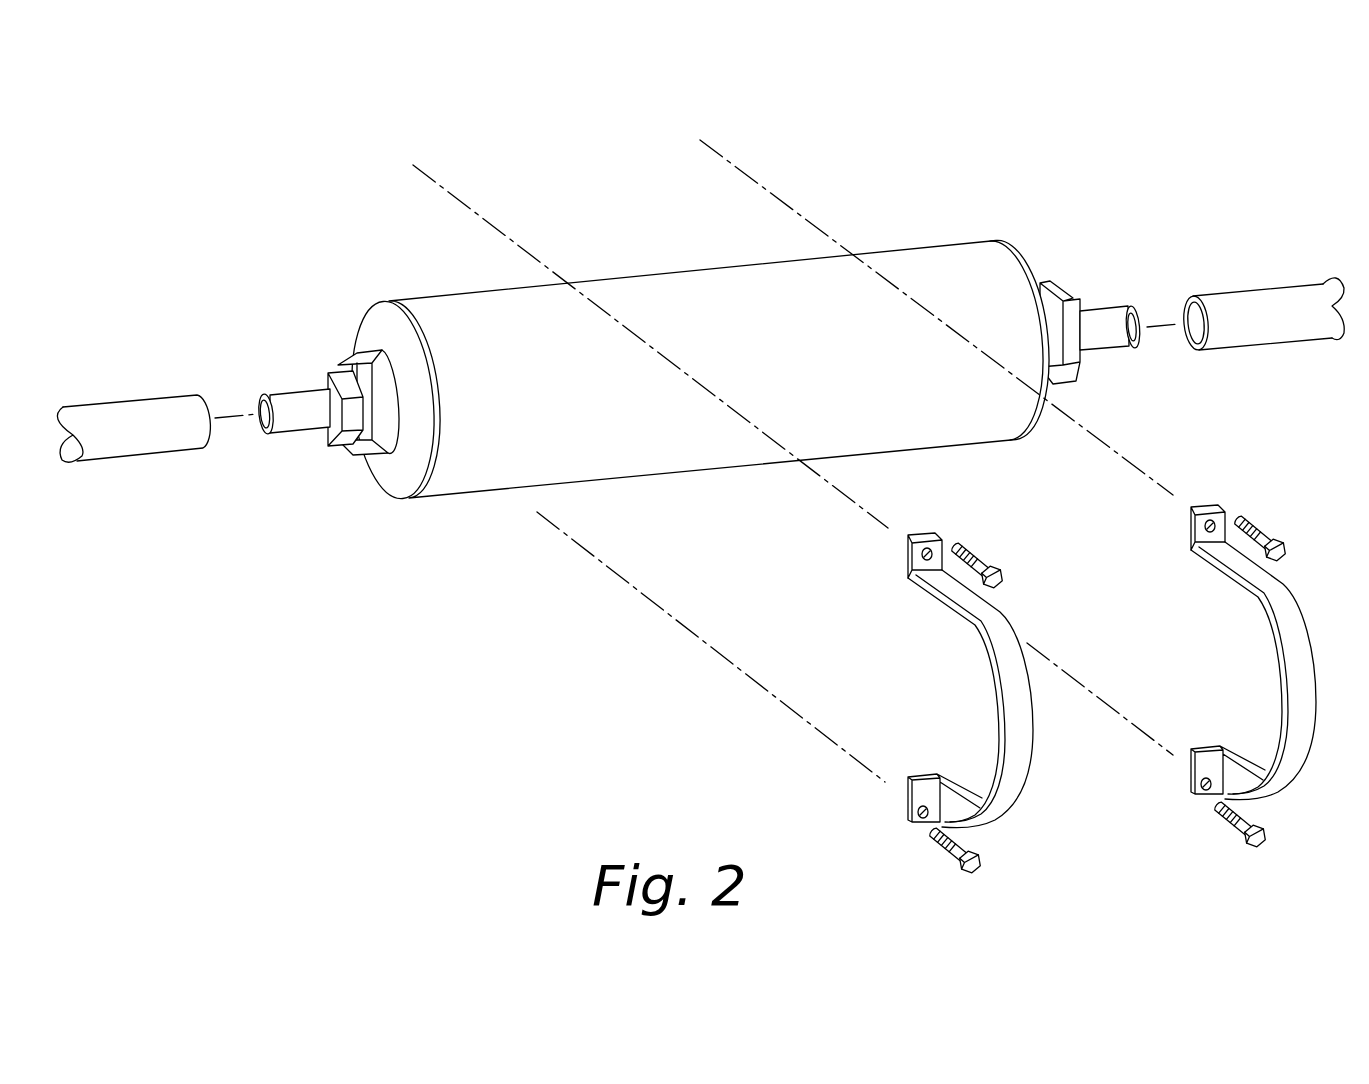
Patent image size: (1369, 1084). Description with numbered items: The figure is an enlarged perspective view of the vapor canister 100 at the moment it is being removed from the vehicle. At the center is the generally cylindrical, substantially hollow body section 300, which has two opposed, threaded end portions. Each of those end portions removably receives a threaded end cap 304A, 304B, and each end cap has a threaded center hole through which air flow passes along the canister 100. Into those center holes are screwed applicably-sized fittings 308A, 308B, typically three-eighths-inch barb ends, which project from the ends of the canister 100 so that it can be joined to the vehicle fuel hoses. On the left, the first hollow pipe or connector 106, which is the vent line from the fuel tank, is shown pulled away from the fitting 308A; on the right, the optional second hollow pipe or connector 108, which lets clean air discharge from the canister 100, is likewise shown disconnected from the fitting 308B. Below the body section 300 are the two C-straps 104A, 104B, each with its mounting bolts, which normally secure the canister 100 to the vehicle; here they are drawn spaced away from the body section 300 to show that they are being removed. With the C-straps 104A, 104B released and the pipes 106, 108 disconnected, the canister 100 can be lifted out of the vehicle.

The canister 100 is at (700, 483).
The body section 300 is at (837, 372).
The end cap 304A is at (385, 326).
The end cap 304B is at (1032, 258).
The fitting 308A is at (302, 415).
The fitting 308B is at (1100, 330).
The first hollow pipe or connector 106 is at (133, 425).
The second hollow pipe/connector 108 is at (1262, 318).
The C-strap 104A is at (1018, 725).
The C-strap 104B is at (1302, 673).